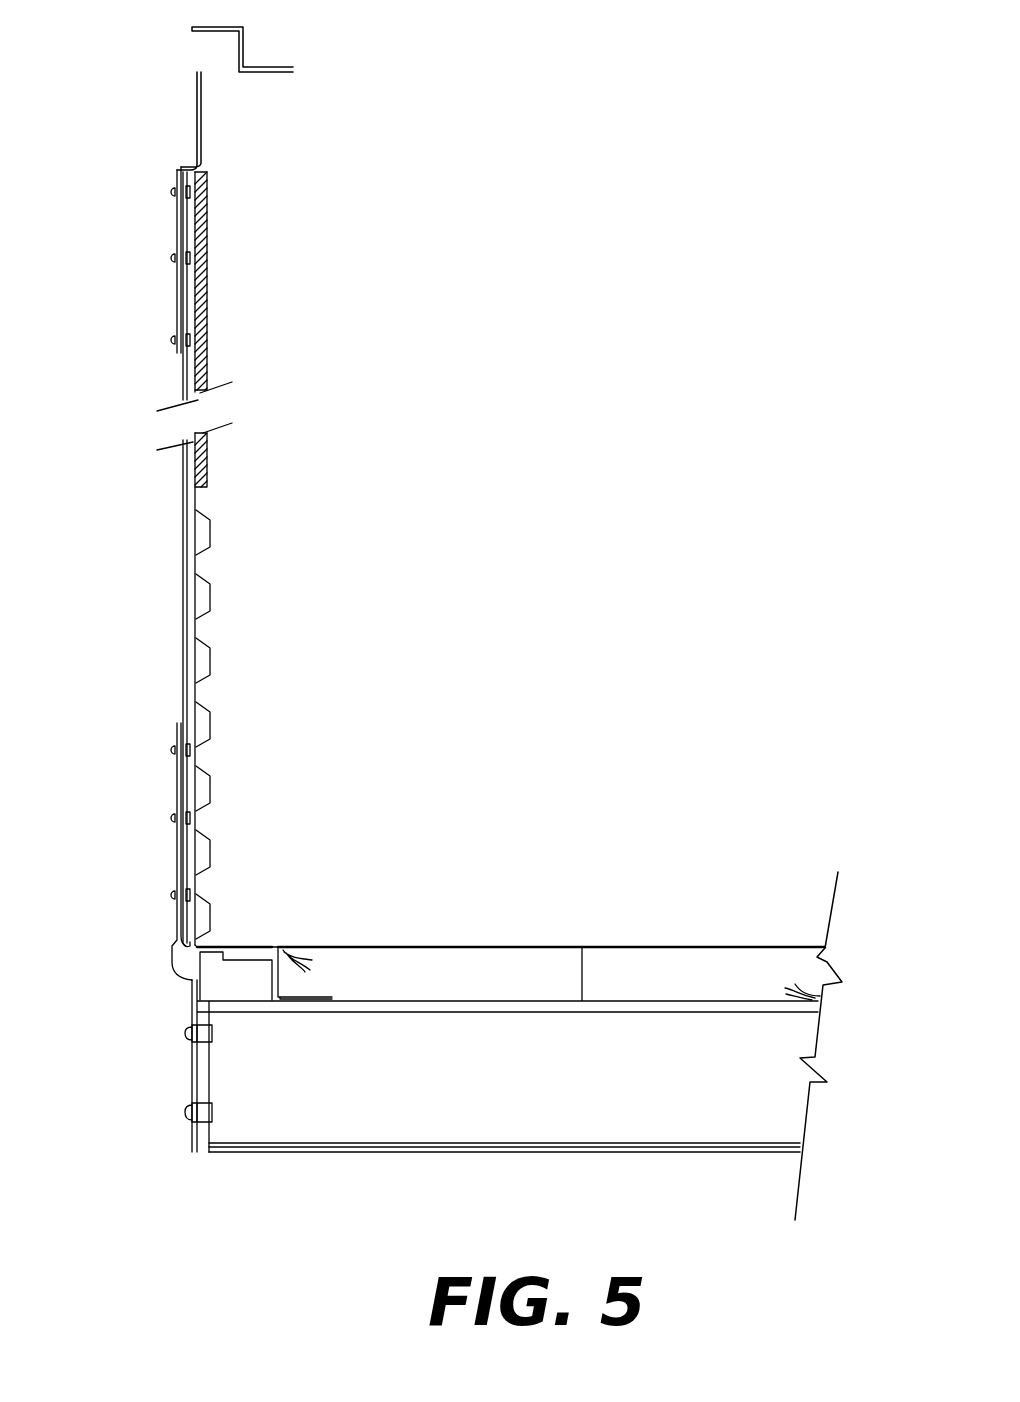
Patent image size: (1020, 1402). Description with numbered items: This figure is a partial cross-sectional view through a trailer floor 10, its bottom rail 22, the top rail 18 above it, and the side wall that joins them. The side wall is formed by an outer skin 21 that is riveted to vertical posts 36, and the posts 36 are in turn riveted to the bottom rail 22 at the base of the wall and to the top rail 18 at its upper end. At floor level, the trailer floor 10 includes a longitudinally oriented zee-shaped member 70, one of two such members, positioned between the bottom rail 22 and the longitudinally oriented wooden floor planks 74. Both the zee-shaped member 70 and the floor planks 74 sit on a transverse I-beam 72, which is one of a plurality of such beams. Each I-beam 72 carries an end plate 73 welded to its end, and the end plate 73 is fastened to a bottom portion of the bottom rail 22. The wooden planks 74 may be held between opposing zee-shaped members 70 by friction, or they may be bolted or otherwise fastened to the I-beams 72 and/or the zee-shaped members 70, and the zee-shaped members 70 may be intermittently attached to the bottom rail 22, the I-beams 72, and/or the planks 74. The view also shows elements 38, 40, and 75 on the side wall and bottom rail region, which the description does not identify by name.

The trailer floor 10 is at (548, 937).
The top rail 18 is at (201, 112).
The outer skin 21 is at (183, 545).
The bottom rail 22 is at (175, 962).
The vertical posts 36 is at (210, 530).
The seal strip 38 is at (208, 258).
The teeth 40 is at (212, 641).
The zee-shaped member 70 is at (245, 960).
The transverse I-beam 72 is at (505, 1152).
The end plate 73 is at (213, 1085).
The wooden floor planks 74 is at (413, 946).
The upper bolt 75 is at (185, 1040).